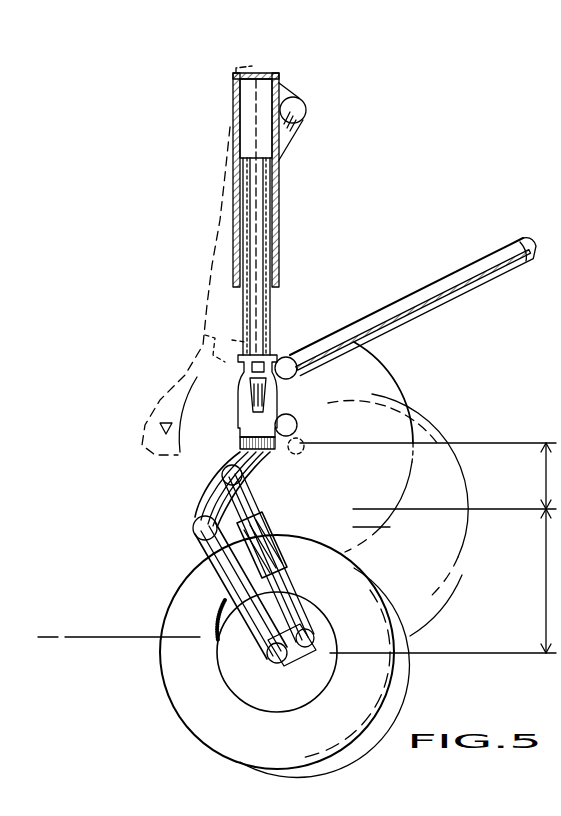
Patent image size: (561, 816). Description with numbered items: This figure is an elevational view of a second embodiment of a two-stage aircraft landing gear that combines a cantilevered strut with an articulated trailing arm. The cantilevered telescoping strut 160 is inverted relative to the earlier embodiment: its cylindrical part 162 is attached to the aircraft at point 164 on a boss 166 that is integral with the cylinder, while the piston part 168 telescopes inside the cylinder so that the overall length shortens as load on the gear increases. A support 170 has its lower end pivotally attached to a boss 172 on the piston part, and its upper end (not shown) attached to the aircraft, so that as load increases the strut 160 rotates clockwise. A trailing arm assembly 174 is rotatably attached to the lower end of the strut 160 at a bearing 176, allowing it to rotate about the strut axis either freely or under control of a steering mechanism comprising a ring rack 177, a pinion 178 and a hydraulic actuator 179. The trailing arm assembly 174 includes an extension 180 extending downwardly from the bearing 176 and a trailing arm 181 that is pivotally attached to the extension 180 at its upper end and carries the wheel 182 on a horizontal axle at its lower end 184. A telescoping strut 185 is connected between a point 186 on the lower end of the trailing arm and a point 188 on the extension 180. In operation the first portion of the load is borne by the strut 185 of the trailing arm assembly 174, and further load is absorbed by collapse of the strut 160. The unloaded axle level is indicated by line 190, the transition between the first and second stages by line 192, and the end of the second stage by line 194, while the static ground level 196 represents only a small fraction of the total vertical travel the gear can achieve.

The cantilevered telescoping strut 160 is at (292, 241).
The cylindrical part 162 is at (230, 130).
The attachment point 164 is at (293, 105).
The boss 166 is at (300, 128).
The piston part 168 is at (242, 318).
The support 170 is at (487, 262).
The boss 172 is at (281, 357).
The trailing arm assembly 174 is at (207, 559).
The bearing 176 is at (280, 392).
The ring rack 177 is at (243, 428).
The pinion 178 is at (297, 428).
The hydraulic actuator 179 is at (278, 412).
The extension 180 is at (213, 495).
The trailing arm 181 is at (197, 547).
The wheel 182 is at (165, 690).
The lower end (axle) 184 is at (268, 662).
The telescoping strut 185 is at (250, 514).
The point 186 is at (312, 645).
The point 188 is at (236, 476).
The line 190 is at (487, 653).
The line 192 is at (483, 510).
The line 194 is at (487, 443).
The static ground level 196 is at (153, 637).